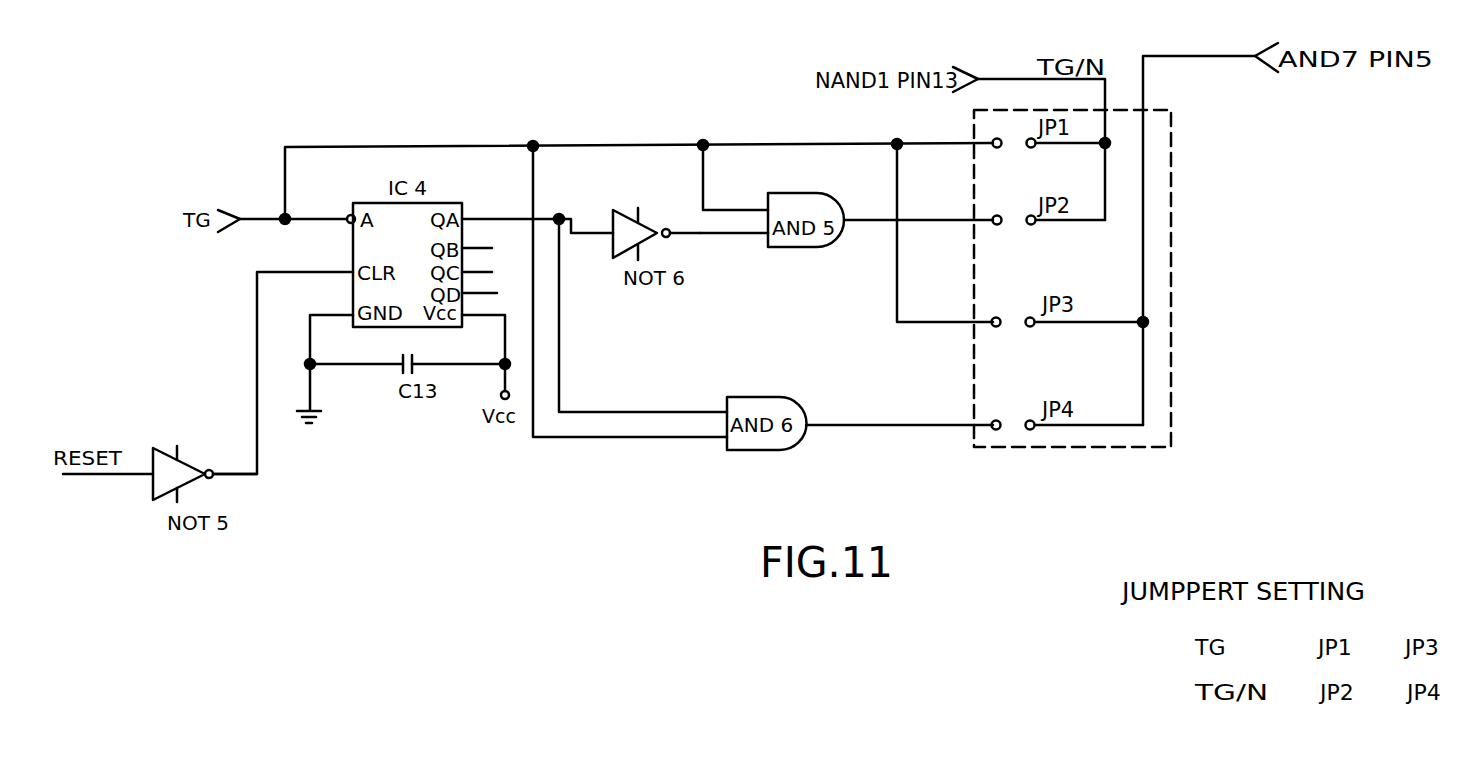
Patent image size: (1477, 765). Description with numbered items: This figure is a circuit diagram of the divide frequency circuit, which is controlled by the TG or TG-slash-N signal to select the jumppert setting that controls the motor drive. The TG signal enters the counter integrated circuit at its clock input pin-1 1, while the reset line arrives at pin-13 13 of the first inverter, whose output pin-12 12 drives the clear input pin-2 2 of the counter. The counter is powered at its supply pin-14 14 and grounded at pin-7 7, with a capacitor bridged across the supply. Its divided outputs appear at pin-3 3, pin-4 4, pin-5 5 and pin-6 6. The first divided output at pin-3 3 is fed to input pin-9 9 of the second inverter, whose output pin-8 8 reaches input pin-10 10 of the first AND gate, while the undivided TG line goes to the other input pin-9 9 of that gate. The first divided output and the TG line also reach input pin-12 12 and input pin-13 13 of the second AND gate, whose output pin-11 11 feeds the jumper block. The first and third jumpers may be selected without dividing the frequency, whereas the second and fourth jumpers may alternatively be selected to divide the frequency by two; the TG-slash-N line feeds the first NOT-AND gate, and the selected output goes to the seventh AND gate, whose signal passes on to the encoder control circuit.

The pin- 1 is at (320, 208).
The pin- 2 is at (283, 360).
The pin- 3 is at (513, 209).
The pin- 4 is at (477, 236).
The pin- 5 is at (477, 260).
The pin- 6 is at (479, 283).
The pin- 7 is at (265, 399).
The pin- 14 is at (485, 346).
The pin- 8 is at (685, 218).
The pin- 9 is at (663, 189).
The pin- 10 is at (734, 225).
The pin- 11 is at (899, 413).
The pin- 12 is at (470, 346).
The pin- 13 is at (395, 310).